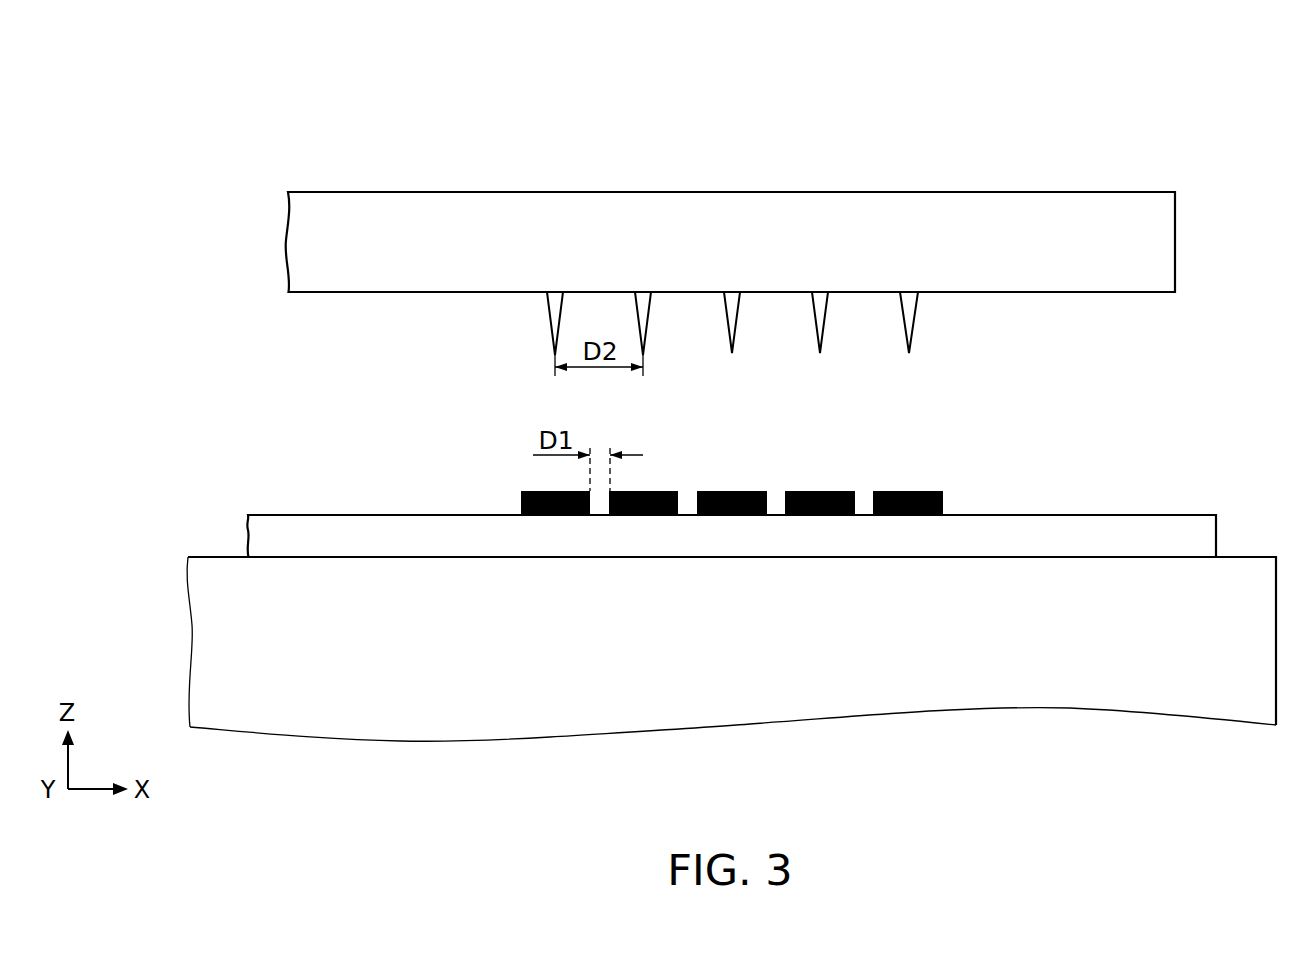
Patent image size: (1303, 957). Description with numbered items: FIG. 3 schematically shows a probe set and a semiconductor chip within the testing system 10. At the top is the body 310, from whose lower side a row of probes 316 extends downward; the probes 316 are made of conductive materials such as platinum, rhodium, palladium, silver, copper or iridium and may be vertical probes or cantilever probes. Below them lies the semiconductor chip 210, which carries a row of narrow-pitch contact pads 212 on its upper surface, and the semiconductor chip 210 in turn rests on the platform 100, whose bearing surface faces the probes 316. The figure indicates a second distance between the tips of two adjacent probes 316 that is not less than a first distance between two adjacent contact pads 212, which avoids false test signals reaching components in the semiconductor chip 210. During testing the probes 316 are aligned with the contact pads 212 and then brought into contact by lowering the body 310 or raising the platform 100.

The testing system 10 is at (747, 63).
The body 310 is at (753, 260).
The probes 316 is at (918, 320).
The semiconductor chip 210 is at (1203, 537).
The contact pads 212 is at (530, 491).
The platform 100 is at (753, 657).